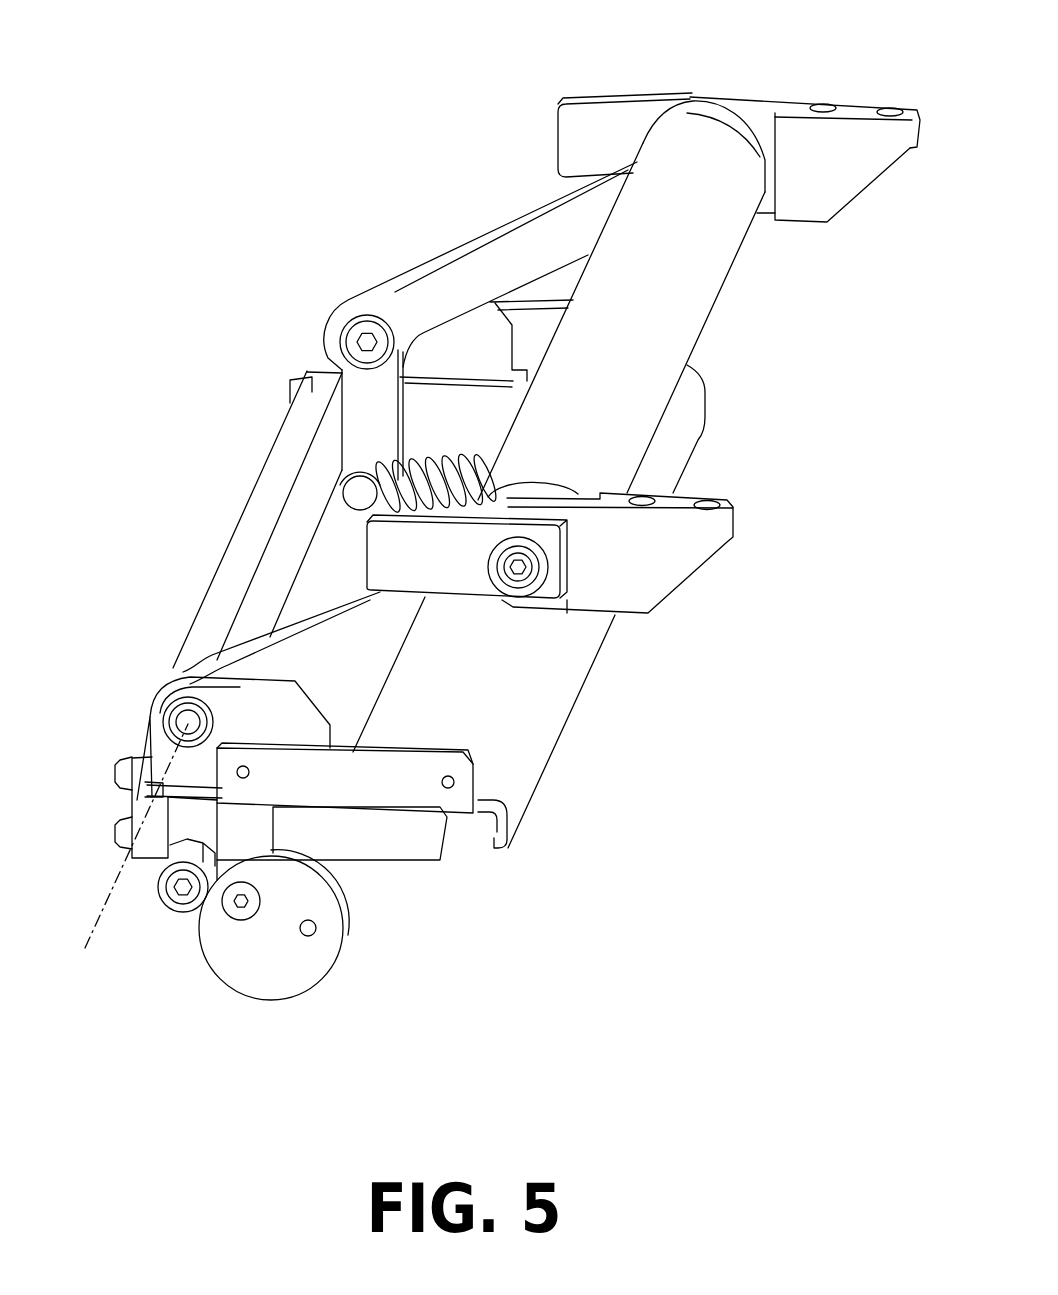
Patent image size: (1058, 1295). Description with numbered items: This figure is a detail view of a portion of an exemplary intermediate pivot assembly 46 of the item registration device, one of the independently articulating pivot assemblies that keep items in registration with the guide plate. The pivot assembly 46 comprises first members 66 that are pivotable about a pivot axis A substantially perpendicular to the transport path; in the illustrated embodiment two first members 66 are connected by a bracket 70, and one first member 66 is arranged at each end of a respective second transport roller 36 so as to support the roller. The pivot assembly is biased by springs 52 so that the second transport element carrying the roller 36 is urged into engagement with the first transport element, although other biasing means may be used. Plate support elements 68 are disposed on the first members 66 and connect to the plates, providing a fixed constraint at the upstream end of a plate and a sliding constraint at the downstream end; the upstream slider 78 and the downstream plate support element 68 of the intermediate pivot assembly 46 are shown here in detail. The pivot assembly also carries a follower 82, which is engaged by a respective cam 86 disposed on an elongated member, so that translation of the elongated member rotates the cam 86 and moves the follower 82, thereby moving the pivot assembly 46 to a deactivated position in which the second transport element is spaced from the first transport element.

The second transport roller 36 is at (700, 258).
The intermediate pivot assembly 46 is at (244, 220).
The spring 52 is at (447, 480).
The first member 66 is at (533, 250).
The plate support element 68 is at (843, 183).
The bracket 70 is at (518, 717).
The slider 78 is at (605, 123).
The follower 82 is at (172, 895).
The cam 86 is at (262, 968).